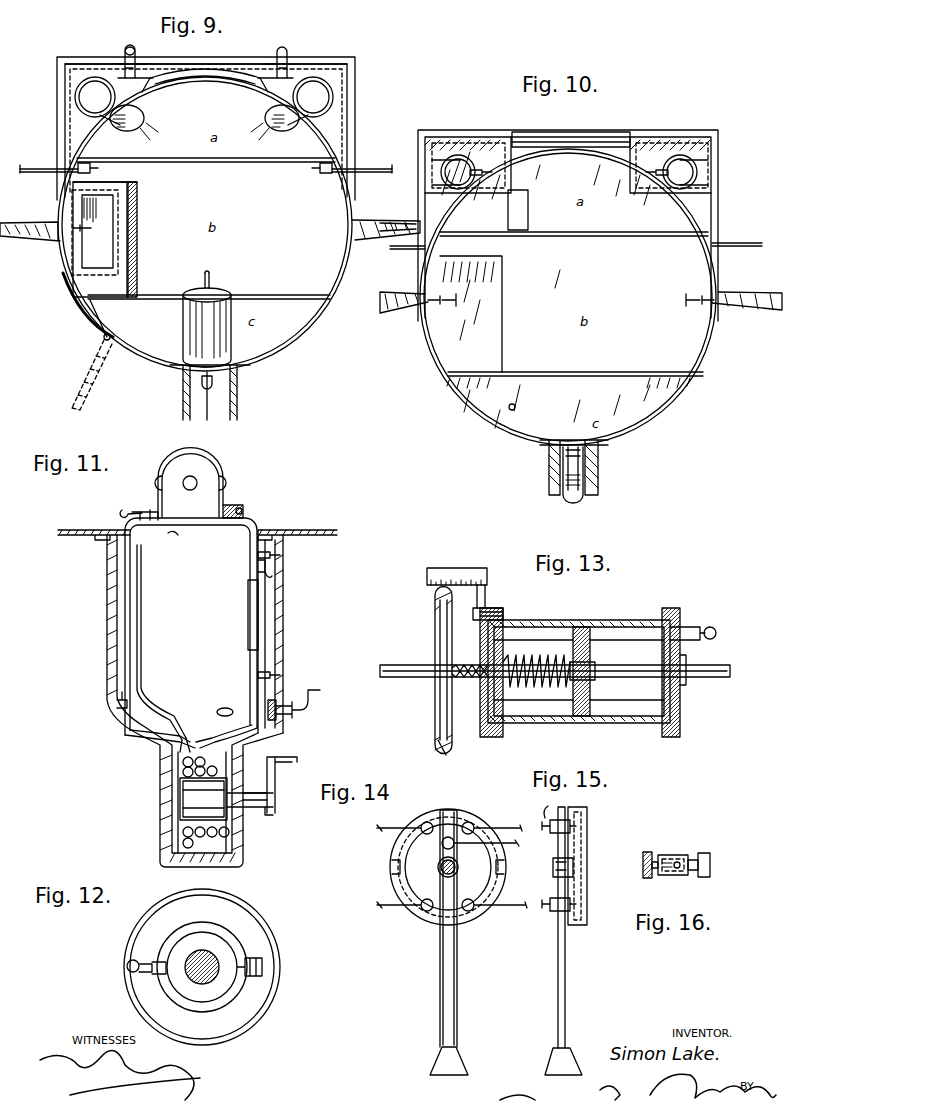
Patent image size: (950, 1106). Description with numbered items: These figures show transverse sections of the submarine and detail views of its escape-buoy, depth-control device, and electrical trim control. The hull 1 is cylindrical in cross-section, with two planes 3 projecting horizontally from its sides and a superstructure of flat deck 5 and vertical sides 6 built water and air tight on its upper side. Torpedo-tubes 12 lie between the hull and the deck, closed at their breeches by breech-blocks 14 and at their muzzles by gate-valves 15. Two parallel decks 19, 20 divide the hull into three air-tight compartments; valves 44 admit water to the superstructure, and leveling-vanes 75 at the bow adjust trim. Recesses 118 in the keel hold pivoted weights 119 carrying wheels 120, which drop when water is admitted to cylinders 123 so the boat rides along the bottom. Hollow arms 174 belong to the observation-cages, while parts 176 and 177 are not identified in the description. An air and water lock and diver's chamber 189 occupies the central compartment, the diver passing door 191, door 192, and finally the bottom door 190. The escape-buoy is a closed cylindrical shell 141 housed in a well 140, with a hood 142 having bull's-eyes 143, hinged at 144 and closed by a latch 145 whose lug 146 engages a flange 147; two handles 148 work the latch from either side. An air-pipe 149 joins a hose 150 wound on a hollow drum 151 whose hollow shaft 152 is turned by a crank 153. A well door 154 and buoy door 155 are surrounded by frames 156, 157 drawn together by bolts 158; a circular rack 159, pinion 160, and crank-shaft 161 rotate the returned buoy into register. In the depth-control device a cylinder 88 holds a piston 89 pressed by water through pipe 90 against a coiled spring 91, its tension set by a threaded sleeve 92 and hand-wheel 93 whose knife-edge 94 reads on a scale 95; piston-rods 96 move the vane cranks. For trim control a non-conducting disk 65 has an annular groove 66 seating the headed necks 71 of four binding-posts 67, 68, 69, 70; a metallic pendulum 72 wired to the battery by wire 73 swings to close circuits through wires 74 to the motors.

In FIG. 9, the hull 1 is at (306, 318).
In FIG. 10, the hull 1 is at (432, 378).
In FIG. 9, the planes 3 is at (34, 222).
In FIG. 10, the planes 3 is at (398, 223).
In FIG. 9, the deck 5 is at (192, 64).
In FIG. 10, the deck 5 is at (548, 130).
In FIG. 11, the deck 5 is at (318, 530).
In FIG. 9, the vertical sides 6 is at (58, 118).
In FIG. 10, the vertical sides 6 is at (418, 172).
In FIG. 9, the torpedo-tubes 12 is at (204, 101).
In FIG. 10, the breech-blocks 14 is at (570, 166).
In FIG. 9, the gate-valves 15 is at (145, 118).
In FIG. 10, the deck 19 is at (574, 213).
In FIG. 10, the deck 20 is at (575, 373).
In FIG. 9, the valves 44 is at (56, 168).
In FIG. 9, the leveling-vanes 75 is at (24, 173).
In FIG. 10, the leveling-vanes 75 is at (404, 249).
In FIG. 9, the recesses 118 is at (237, 398).
In FIG. 10, the recesses 118 is at (598, 495).
In FIG. 9, the weights 119 is at (205, 404).
In FIG. 10, the weights 119 is at (572, 500).
In FIG. 10, the wheels 120 is at (580, 460).
In FIG. 9, the cylinders 123 is at (207, 319).
In FIG. 9, the hollow arms 174 is at (138, 40).
In FIG. 9, the air pipe 176 is at (118, 64).
In FIG. 9, the dome 177 is at (200, 84).
In FIG. 9, the air and water lock and diver's chamber 189 is at (132, 182).
In FIG. 10, the air and water lock and diver's chamber 189 is at (471, 314).
In FIG. 9, the door 190 is at (72, 296).
In FIG. 9, the door 191 is at (137, 246).
In FIG. 9, the door 192 is at (100, 239).
In FIG. 11, the well 140 is at (107, 618).
In FIG. 11, the closed cylindrical shell 141 is at (191, 633).
In FIG. 12, the closed cylindrical shell 141 is at (258, 990).
In FIG. 11, the hood 142 is at (220, 474).
In FIG. 12, the hood 142 is at (202, 973).
In FIG. 11, the bull's-eyes 143 is at (192, 472).
In FIG. 11, the hinge 144 is at (243, 510).
In FIG. 11, the latch 145 is at (145, 528).
In FIG. 11, the lug 146 is at (146, 511).
In FIG. 12, the lug 146 is at (158, 972).
In FIG. 12, the flange 147 is at (185, 932).
In FIG. 11, the handles 148 is at (125, 510).
In FIG. 12, the handles 148 is at (126, 964).
In FIG. 11, the air-pipe 149 is at (142, 670).
In FIG. 11, the hose 150 is at (180, 824).
In FIG. 11, the drum 151 is at (203, 799).
In FIG. 11, the hollow shaft 152 is at (258, 810).
In FIG. 11, the crank 153 is at (284, 768).
In FIG. 11, the door 154 is at (283, 616).
In FIG. 11, the door 155 is at (258, 618).
In FIG. 11, the frame 156 is at (258, 566).
In FIG. 11, the frame 157 is at (275, 577).
In FIG. 11, the bolts 158 is at (280, 555).
In FIG. 11, the circular rack 159 is at (117, 702).
In FIG. 11, the pinion 160 is at (268, 712).
In FIG. 11, the crank-shaft 161 is at (298, 704).
In FIG. 13, the cylinder 88 is at (545, 620).
In FIG. 13, the piston 89 is at (590, 650).
In FIG. 13, the pipe 90 is at (708, 626).
In FIG. 13, the coiled spring 91 is at (536, 662).
In FIG. 13, the threaded sleeve 92 is at (477, 631).
In FIG. 13, the hand-wheel 93 is at (434, 624).
In FIG. 13, the knife-edge 94 is at (451, 755).
In FIG. 13, the scale 95 is at (466, 568).
In FIG. 13, the piston-rods 96 is at (555, 661).
In FIG. 14, the disk 65 is at (448, 867).
In FIG. 15, the disk 65 is at (587, 856).
In FIG. 14, the annular groove 66 is at (422, 910).
In FIG. 14, the binding-post 67 is at (427, 822).
In FIG. 16, the binding-post 67 is at (668, 855).
In FIG. 14, the binding-post 68 is at (470, 912).
In FIG. 15, the binding-post 68 is at (550, 910).
In FIG. 14, the binding-post 69 is at (470, 822).
In FIG. 15, the binding-post 69 is at (556, 816).
In FIG. 14, the binding-post 70 is at (440, 876).
In FIG. 16, the headed neck 71 is at (700, 853).
In FIG. 14, the metallic pendulum 72 is at (457, 978).
In FIG. 15, the metallic pendulum 72 is at (566, 978).
In FIG. 14, the wire 73 is at (516, 845).
In FIG. 14, the wires 74 is at (448, 857).